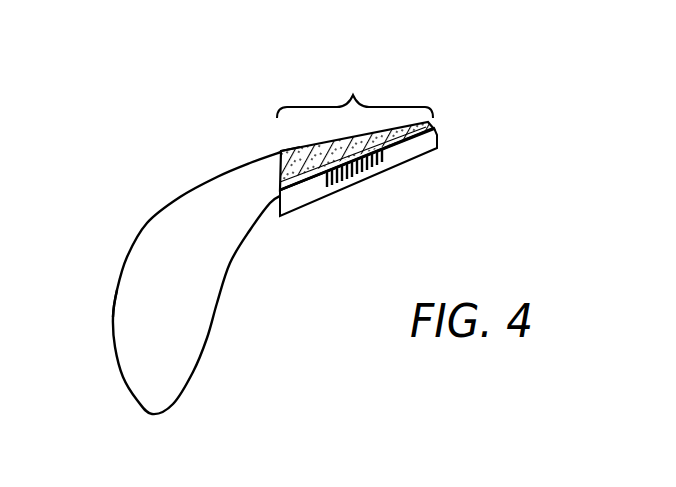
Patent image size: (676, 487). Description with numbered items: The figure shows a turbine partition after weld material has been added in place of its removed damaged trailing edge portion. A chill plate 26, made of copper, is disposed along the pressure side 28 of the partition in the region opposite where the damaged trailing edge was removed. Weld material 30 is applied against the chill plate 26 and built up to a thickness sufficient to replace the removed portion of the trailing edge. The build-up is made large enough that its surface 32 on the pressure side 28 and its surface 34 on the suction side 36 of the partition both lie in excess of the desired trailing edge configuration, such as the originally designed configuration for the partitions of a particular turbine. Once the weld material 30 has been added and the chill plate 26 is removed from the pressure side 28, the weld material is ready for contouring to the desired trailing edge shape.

The chill plate 26 is at (343, 190).
The pressure side 28 is at (208, 338).
The weld material 30 is at (283, 153).
The surface 32 is at (368, 150).
The surface 34 is at (360, 137).
The suction side 36 is at (112, 300).